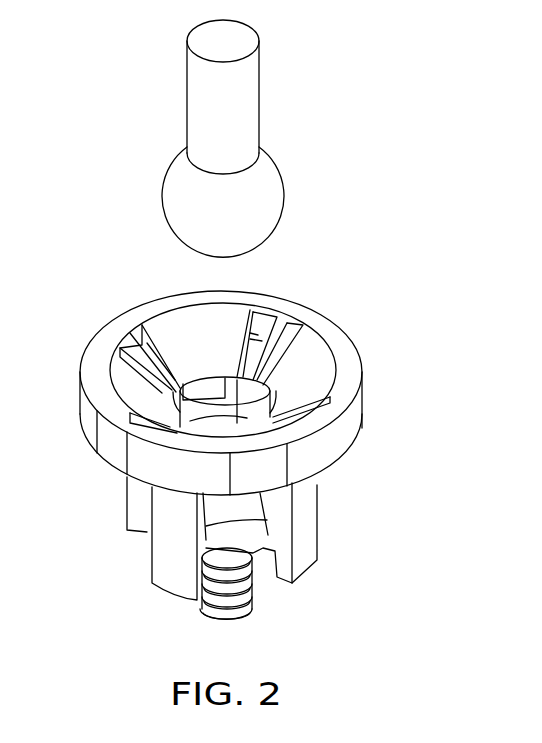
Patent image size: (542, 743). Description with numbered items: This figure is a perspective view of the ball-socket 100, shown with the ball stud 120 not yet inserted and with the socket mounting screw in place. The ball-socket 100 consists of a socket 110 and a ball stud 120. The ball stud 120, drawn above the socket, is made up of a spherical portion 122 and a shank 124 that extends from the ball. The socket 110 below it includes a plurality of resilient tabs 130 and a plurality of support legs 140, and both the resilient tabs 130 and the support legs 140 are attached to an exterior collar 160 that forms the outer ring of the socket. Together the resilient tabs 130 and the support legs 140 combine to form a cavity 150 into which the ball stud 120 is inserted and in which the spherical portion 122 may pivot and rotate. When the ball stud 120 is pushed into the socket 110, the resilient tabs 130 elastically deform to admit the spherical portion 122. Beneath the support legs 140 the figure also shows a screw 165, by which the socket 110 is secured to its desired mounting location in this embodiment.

The ball-socket 100 is at (76, 188).
The socket 110 is at (323, 472).
The ball stud 120 is at (280, 163).
The spherical portion 122 is at (265, 212).
The shank 124 is at (255, 83).
The resilient tabs 130 is at (180, 323).
The support legs 140 is at (127, 340).
The cavity 150 is at (218, 404).
The exterior collar 160 is at (108, 400).
The screw 165 is at (253, 607).